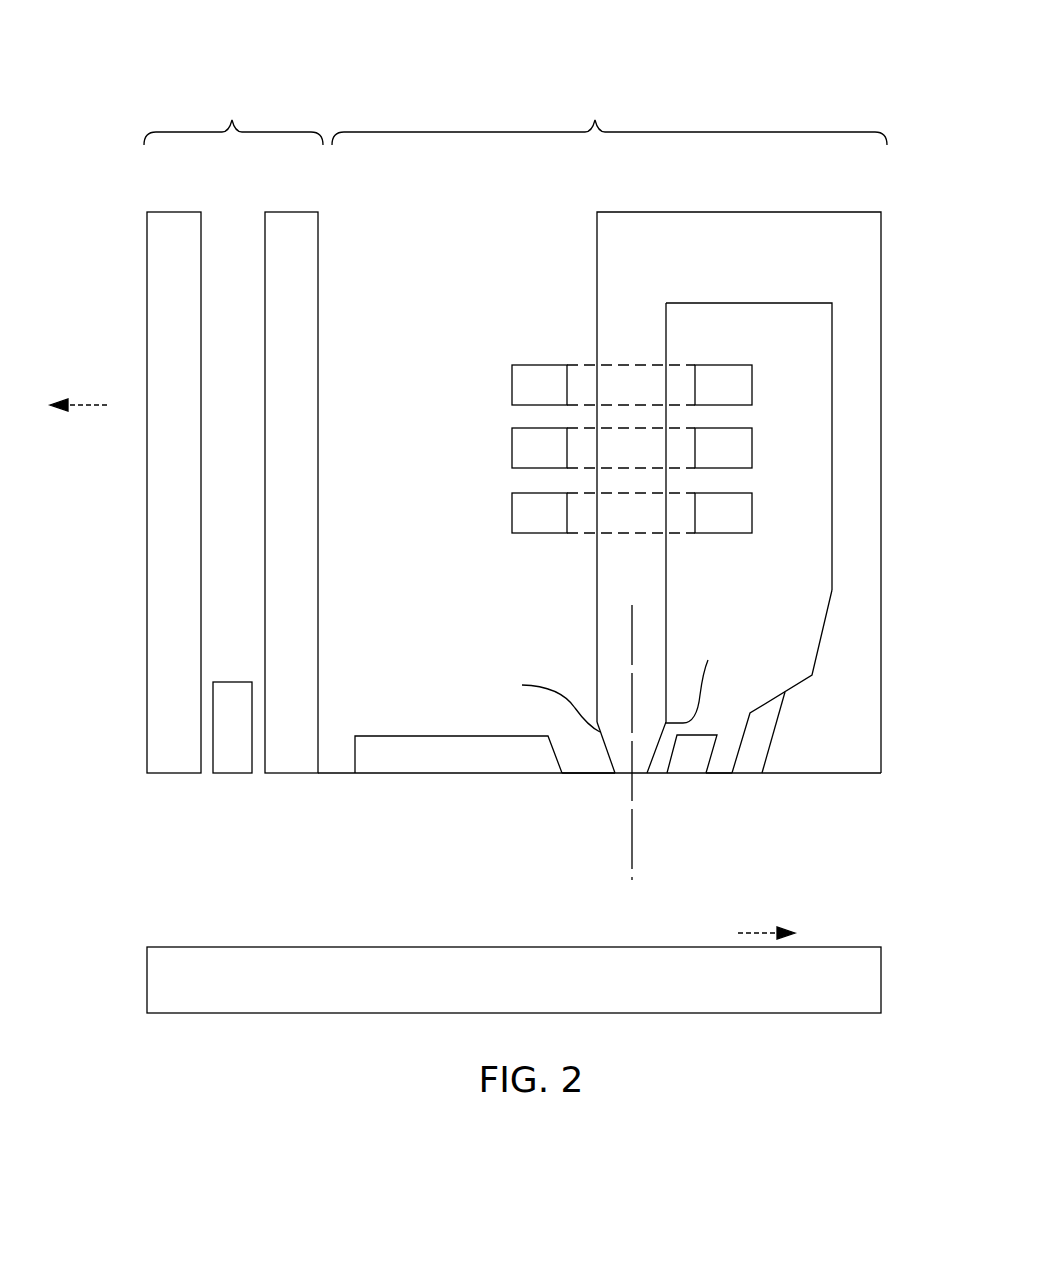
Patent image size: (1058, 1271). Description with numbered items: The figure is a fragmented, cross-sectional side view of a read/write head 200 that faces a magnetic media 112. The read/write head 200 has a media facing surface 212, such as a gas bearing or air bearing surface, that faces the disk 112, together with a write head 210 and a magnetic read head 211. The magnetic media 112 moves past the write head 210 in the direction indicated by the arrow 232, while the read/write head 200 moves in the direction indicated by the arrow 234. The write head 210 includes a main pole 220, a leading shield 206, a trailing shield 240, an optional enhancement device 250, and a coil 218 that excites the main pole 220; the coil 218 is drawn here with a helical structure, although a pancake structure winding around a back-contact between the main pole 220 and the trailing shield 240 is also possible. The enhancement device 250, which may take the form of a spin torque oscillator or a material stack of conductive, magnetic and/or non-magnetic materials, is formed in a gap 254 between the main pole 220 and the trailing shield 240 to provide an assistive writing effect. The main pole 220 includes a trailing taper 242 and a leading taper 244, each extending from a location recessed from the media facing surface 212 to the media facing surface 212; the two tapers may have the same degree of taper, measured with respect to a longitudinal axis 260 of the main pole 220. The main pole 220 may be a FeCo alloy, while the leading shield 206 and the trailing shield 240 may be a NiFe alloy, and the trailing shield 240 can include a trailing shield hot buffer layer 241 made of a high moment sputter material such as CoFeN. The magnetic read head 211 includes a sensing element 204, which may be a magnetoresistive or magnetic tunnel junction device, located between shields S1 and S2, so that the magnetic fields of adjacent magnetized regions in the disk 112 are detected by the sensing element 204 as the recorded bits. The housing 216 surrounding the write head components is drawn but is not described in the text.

The read/write head 200 is at (138, 38).
The magnetic read head 211 is at (233, 117).
The write head 210 is at (609, 117).
The housing 216 is at (881, 263).
The trailing shield 240 is at (881, 705).
The trailing shield hot buffer layer 241 is at (755, 753).
The media facing surface 212 is at (855, 773).
The coil 218 is at (540, 533).
The main pole 220 is at (658, 608).
The trailing taper 242 is at (709, 682).
The leading taper 244 is at (537, 700).
The enhancement device 250 is at (682, 762).
The gap 254 is at (587, 773).
The longitudinal axis 260 is at (632, 848).
The shield S1 is at (169, 773).
The shield S2 is at (295, 773).
The MR sensing element 204 is at (233, 773).
The leading shield 206 is at (395, 773).
The arrow 234 is at (90, 405).
The arrow 232 is at (755, 933).
The magnetic media 112 is at (881, 977).